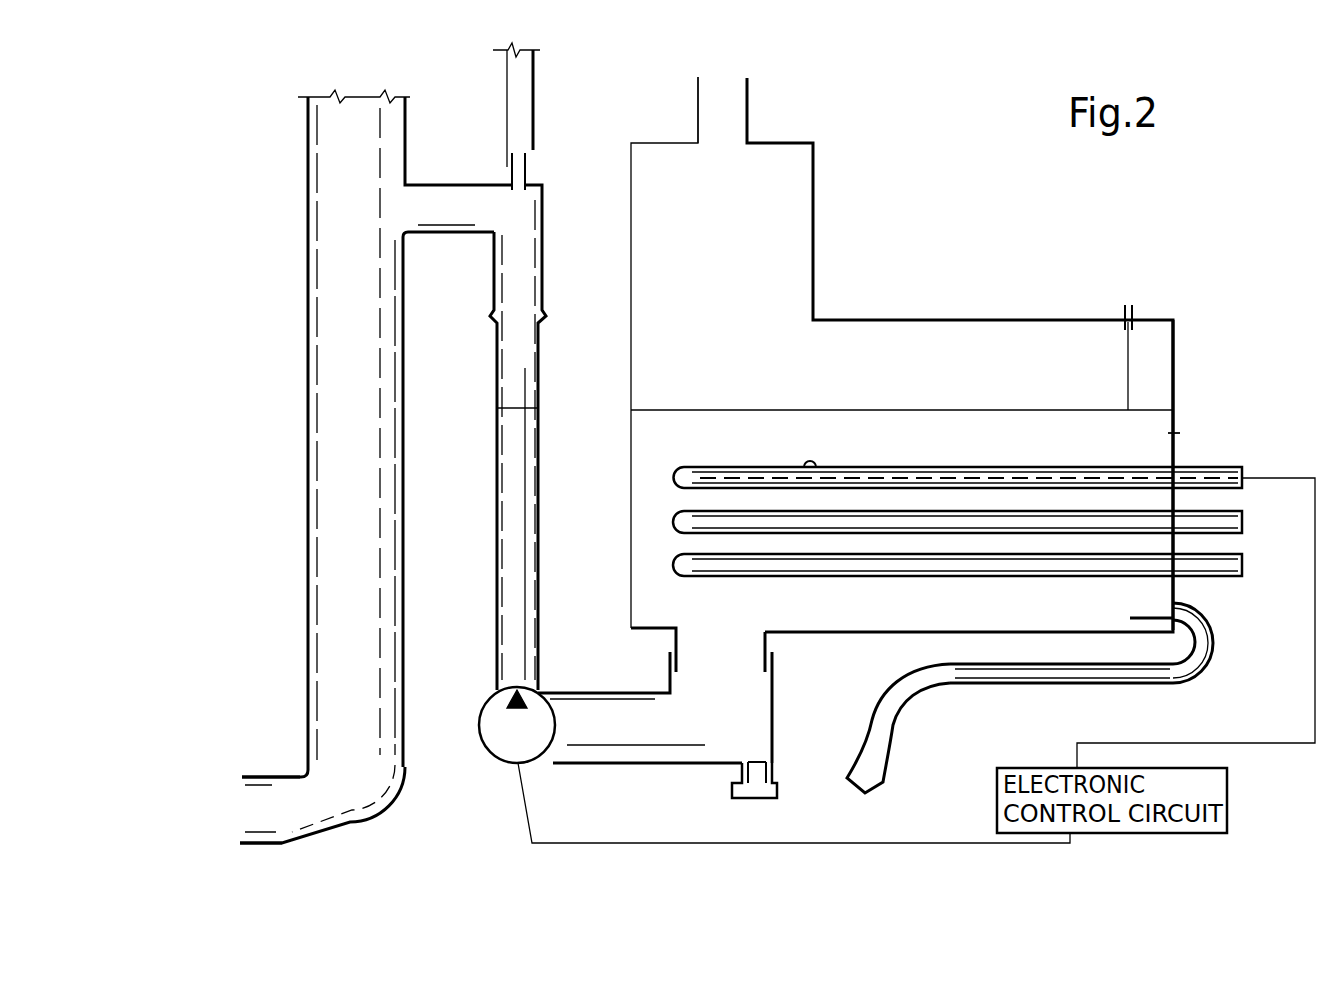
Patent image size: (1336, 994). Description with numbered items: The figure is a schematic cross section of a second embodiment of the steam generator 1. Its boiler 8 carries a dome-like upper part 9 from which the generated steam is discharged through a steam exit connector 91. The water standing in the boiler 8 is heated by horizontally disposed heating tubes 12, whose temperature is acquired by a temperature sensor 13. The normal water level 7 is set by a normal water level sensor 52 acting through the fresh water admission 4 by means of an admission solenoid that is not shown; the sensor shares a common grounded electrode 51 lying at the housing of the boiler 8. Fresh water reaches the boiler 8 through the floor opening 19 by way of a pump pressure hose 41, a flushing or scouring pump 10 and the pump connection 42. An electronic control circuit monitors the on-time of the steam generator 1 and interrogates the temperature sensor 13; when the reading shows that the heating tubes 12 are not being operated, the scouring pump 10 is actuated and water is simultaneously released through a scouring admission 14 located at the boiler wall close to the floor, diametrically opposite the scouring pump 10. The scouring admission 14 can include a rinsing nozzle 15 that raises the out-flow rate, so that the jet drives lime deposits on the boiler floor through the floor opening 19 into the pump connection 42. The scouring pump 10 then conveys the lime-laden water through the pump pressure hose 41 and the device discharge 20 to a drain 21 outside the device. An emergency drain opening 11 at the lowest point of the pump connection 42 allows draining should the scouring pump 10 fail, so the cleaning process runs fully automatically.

The steam generator 1 is at (795, 162).
The fresh water admission 4 is at (531, 160).
The normal water level 7 is at (985, 410).
The boiler 8 is at (1177, 353).
The dome-like upper part 9 is at (778, 248).
The scouring pump 10 is at (508, 765).
The emergency drain opening 11 is at (754, 790).
The heating tubes 12 is at (1242, 470).
The temperature sensor 13 is at (813, 460).
The scouring admission 14 is at (1213, 652).
The rinsing nozzle 15 is at (1130, 608).
The floor opening 19 is at (722, 632).
The device discharge 20 is at (305, 231).
The drain 21 is at (243, 793).
The pump pressure hose 41 is at (540, 511).
The pump connection 42 is at (637, 768).
The common grounded electrode 51 is at (1178, 433).
The normal water level sensor 52 is at (1133, 305).
The steam exit connector 91 is at (720, 80).